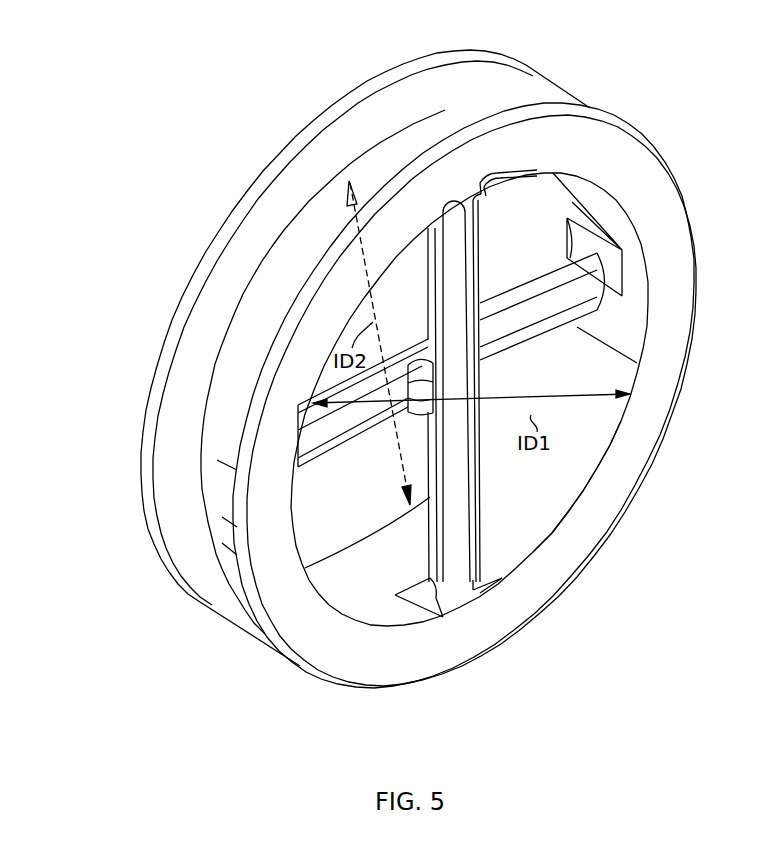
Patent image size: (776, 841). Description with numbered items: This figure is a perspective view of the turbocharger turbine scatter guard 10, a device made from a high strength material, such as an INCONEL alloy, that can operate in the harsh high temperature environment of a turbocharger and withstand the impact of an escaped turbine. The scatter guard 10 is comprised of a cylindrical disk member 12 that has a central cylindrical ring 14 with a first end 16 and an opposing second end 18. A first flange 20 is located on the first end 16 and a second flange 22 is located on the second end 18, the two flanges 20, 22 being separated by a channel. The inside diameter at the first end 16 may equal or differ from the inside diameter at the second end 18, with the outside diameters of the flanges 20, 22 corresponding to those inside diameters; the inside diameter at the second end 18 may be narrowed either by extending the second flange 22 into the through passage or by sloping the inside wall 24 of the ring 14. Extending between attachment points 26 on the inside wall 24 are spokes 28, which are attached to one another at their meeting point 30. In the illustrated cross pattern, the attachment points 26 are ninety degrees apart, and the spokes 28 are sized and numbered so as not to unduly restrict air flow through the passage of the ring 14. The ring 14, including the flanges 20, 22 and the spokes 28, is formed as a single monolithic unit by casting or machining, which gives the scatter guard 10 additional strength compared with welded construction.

The turbocharger turbine scatter guard 10 is at (122, 138).
The cylindrical disk member 12 is at (223, 498).
The central cylindrical ring 14 is at (388, 148).
The first end 16 is at (540, 607).
The second end 18 is at (373, 538).
The first flange 20 is at (635, 442).
The second flange 22 is at (480, 83).
The inside wall 24 is at (532, 493).
The attachment points 26 is at (483, 193).
The spokes 28 is at (580, 282).
The meeting point 30 is at (423, 378).